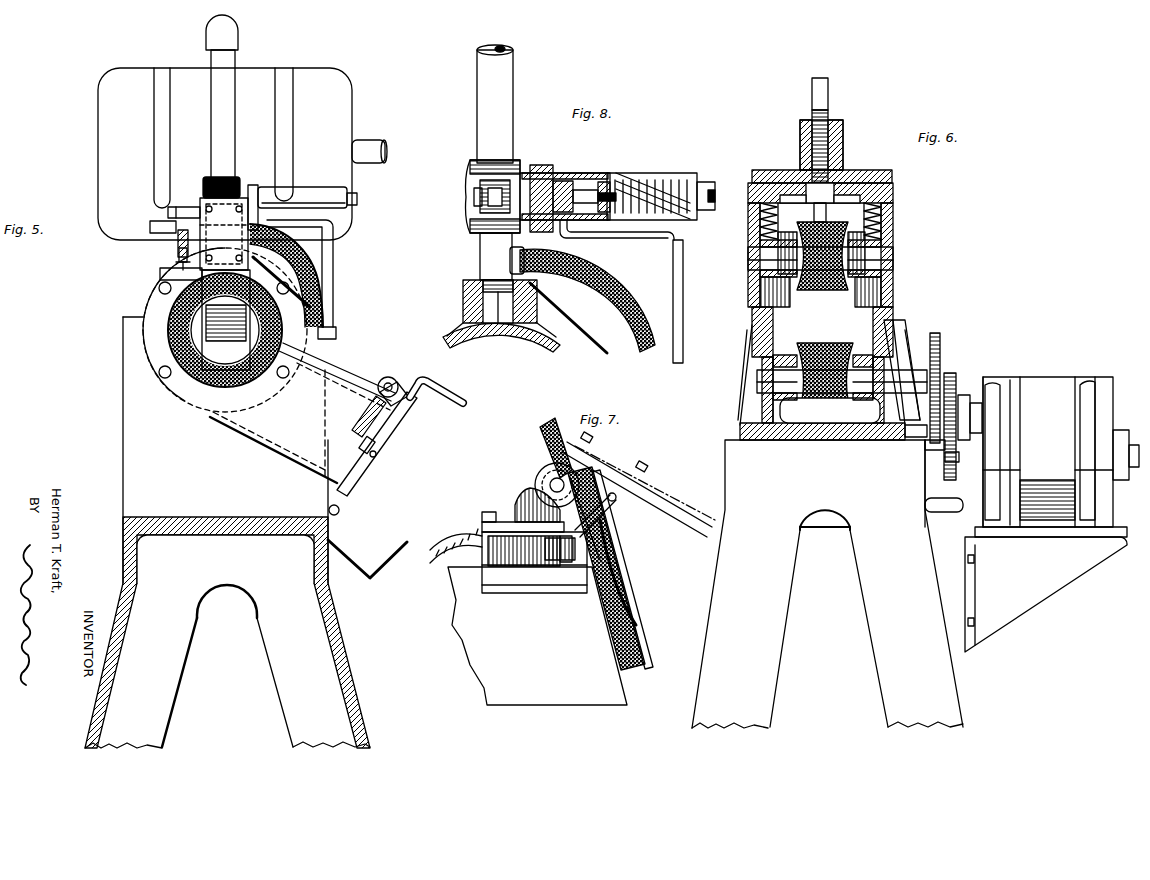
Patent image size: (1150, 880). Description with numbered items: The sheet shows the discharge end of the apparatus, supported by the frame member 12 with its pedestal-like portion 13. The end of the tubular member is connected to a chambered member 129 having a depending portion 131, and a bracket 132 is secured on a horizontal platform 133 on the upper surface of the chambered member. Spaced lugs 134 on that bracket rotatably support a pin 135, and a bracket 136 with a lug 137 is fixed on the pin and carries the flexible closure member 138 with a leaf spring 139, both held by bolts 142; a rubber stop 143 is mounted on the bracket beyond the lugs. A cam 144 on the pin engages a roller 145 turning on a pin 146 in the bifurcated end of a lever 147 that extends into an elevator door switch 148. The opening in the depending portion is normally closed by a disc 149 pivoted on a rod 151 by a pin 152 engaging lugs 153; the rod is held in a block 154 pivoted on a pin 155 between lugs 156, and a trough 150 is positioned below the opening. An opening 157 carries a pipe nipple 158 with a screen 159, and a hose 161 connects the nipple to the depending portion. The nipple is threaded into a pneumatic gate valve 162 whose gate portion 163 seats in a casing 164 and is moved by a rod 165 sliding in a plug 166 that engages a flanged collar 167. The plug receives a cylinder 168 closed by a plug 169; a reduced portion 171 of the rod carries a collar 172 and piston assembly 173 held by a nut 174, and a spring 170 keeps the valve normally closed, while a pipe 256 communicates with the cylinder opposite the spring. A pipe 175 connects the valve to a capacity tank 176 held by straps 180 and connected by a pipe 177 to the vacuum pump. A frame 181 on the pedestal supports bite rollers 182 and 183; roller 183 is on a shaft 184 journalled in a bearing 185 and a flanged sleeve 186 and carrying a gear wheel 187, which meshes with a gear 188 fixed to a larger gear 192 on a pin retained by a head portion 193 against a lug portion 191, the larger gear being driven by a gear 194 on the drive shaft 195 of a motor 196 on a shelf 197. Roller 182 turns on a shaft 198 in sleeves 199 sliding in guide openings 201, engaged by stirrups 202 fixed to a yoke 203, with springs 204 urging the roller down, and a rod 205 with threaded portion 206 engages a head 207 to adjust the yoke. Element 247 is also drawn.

In FIG. 5, the frame member 12 is at (123, 405).
In FIG. 5, the pedestal-like portion 13 is at (120, 653).
In FIG. 6, the pedestal-like portion 13 is at (778, 617).
In FIG. 8, the chambered member 129 is at (462, 333).
In FIG. 7, the chambered member 129 is at (537, 636).
In FIG. 5, the depending portion 131 is at (283, 437).
In FIG. 5, the bracket 132 is at (244, 198).
In FIG. 7, the bracket 132 is at (520, 496).
In FIG. 5, the horizontal platform 133 is at (160, 275).
In FIG. 7, the horizontal platform 133 is at (506, 590).
In FIG. 7, the lugs 134 is at (546, 469).
In FIG. 7, the pin 135 is at (552, 483).
In FIG. 7, the bracket 136 is at (597, 592).
In FIG. 7, the lug 137 is at (578, 470).
In FIG. 5, the closure member 138 is at (168, 340).
In FIG. 7, the closure member 138 is at (640, 645).
In FIG. 5, the leaf spring 139 is at (210, 308).
In FIG. 7, the leaf spring 139 is at (636, 620).
In FIG. 7, the bolts 142 is at (618, 508).
In FIG. 5, the rubber stop 143 is at (210, 177).
In FIG. 7, the rubber stop 143 is at (553, 430).
In FIG. 5, the cam 144 is at (184, 207).
In FIG. 7, the cam 144 is at (525, 508).
In FIG. 5, the roller 145 is at (150, 226).
In FIG. 7, the roller 145 is at (510, 517).
In FIG. 7, the pin 146 is at (565, 565).
In FIG. 7, the lever 147 is at (556, 560).
In FIG. 5, the elevator door switch 148 is at (176, 263).
In FIG. 7, the elevator door switch 148 is at (482, 567).
In FIG. 5, the disc 149 is at (355, 483).
In FIG. 5, the trough 150 is at (372, 574).
In FIG. 5, the rod 151 is at (385, 428).
In FIG. 5, the pin 152 is at (378, 450).
In FIG. 5, the lugs 153 is at (374, 458).
In FIG. 5, the block 154 is at (418, 381).
In FIG. 5, the pin 155 is at (389, 382).
In FIG. 5, the lugs 156 is at (380, 383).
In FIG. 8, the opening 157 is at (483, 310).
In FIG. 5, the pipe nipple 158 is at (226, 320).
In FIG. 8, the pipe nipple 158 is at (480, 258).
In FIG. 8, the screen 159 is at (510, 326).
In FIG. 5, the hose 161 is at (312, 273).
In FIG. 8, the hose 161 is at (602, 284).
In FIG. 8, the pneumatic gate valve 162 is at (470, 193).
In FIG. 8, the gate portion 163 is at (499, 188).
In FIG. 8, the casing 164 is at (474, 205).
In FIG. 8, the rod 165 is at (562, 180).
In FIG. 8, the plug 166 is at (566, 190).
In FIG. 5, the flanged collar 167 is at (254, 185).
In FIG. 8, the flanged collar 167 is at (541, 165).
In FIG. 5, the cylinder 168 is at (308, 187).
In FIG. 5, the plug 169 is at (357, 199).
In FIG. 8, the plug 169 is at (705, 182).
In FIG. 8, the spring 170 is at (661, 175).
In FIG. 8, the reduced portion 171 is at (606, 185).
In FIG. 8, the collar 172 is at (592, 190).
In FIG. 8, the piston assembly 173 is at (603, 238).
In FIG. 8, the nut 174 is at (612, 193).
In FIG. 5, the pipe 175 is at (206, 32).
In FIG. 8, the pipe 175 is at (513, 73).
In FIG. 5, the capacity tank 176 is at (98, 108).
In FIG. 5, the pipe 177 is at (370, 140).
In FIG. 5, the straps 180 is at (154, 136).
In FIG. 6, the frame 181 is at (897, 318).
In FIG. 6, the bite roller 182 is at (823, 291).
In FIG. 6, the bite roller 183 is at (823, 350).
In FIG. 6, the shaft 184 is at (760, 380).
In FIG. 6, the bearing 185 is at (762, 397).
In FIG. 6, the flanged sleeve 186 is at (898, 360).
In FIG. 6, the gear wheel 187 is at (942, 346).
In FIG. 6, the gear 188 is at (925, 446).
In FIG. 6, the lug portion 191 is at (914, 437).
In FIG. 6, the gear 192 is at (950, 378).
In FIG. 6, the head portion 193 is at (977, 400).
In FIG. 6, the gear 194 is at (935, 480).
In FIG. 6, the drive shaft 195 is at (955, 465).
In FIG. 6, the motor 196 is at (1048, 390).
In FIG. 6, the shelf 197 is at (1032, 585).
In FIG. 6, the shaft 198 is at (893, 252).
In FIG. 6, the sleeves 199 is at (890, 280).
In FIG. 6, the guide openings 201 is at (893, 299).
In FIG. 6, the stirrups 202 is at (790, 278).
In FIG. 6, the yoke 203 is at (893, 190).
In FIG. 6, the springs 204 is at (884, 222).
In FIG. 6, the rod 205 is at (820, 78).
In FIG. 6, the threaded portion 206 is at (830, 118).
In FIG. 6, the head 207 is at (802, 142).
In FIG. 5, the rod 247 is at (293, 292).
In FIG. 8, the rod 247 is at (590, 333).
In FIG. 5, the pipe 256 is at (337, 244).
In FIG. 8, the pipe 256 is at (683, 267).